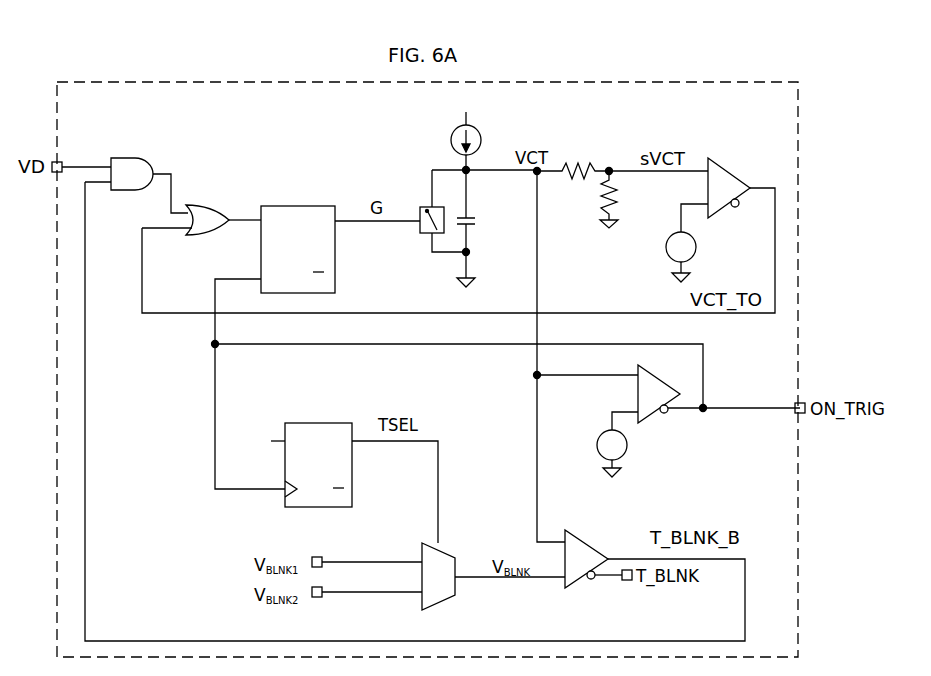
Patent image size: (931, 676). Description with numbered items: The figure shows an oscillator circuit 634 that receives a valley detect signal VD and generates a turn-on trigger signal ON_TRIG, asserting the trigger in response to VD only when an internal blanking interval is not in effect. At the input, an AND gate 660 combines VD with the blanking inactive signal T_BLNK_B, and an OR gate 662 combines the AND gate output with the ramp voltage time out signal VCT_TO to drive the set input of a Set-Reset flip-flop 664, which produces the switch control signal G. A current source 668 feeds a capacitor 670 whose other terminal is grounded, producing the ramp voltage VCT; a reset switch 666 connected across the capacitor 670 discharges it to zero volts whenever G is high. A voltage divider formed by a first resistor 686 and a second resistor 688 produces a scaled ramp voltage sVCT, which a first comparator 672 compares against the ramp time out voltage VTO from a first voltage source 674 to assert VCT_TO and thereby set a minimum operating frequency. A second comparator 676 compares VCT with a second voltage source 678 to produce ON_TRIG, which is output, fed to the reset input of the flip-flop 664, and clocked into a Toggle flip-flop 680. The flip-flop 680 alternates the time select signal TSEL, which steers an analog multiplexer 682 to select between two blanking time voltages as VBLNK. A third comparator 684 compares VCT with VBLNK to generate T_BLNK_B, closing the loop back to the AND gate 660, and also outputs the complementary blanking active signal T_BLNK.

The oscillator circuit 634 is at (665, 82).
The AND gate 660 is at (130, 158).
The OR gate 662 is at (200, 237).
The Set-Reset (SR) flip-flop 664 is at (297, 206).
The reset switch 666 is at (420, 224).
The current source 668 is at (482, 134).
The capacitor 670 is at (474, 224).
The first comparator 672 is at (725, 160).
The first voltage source 674 is at (697, 247).
The second comparator 676 is at (653, 414).
The second voltage source 678 is at (600, 432).
The Toggle (T) flip-flop 680 is at (300, 423).
The analog multiplexer 682 is at (440, 602).
The third comparator 684 is at (583, 536).
The first resistor 686 is at (585, 165).
The second resistor 688 is at (601, 200).